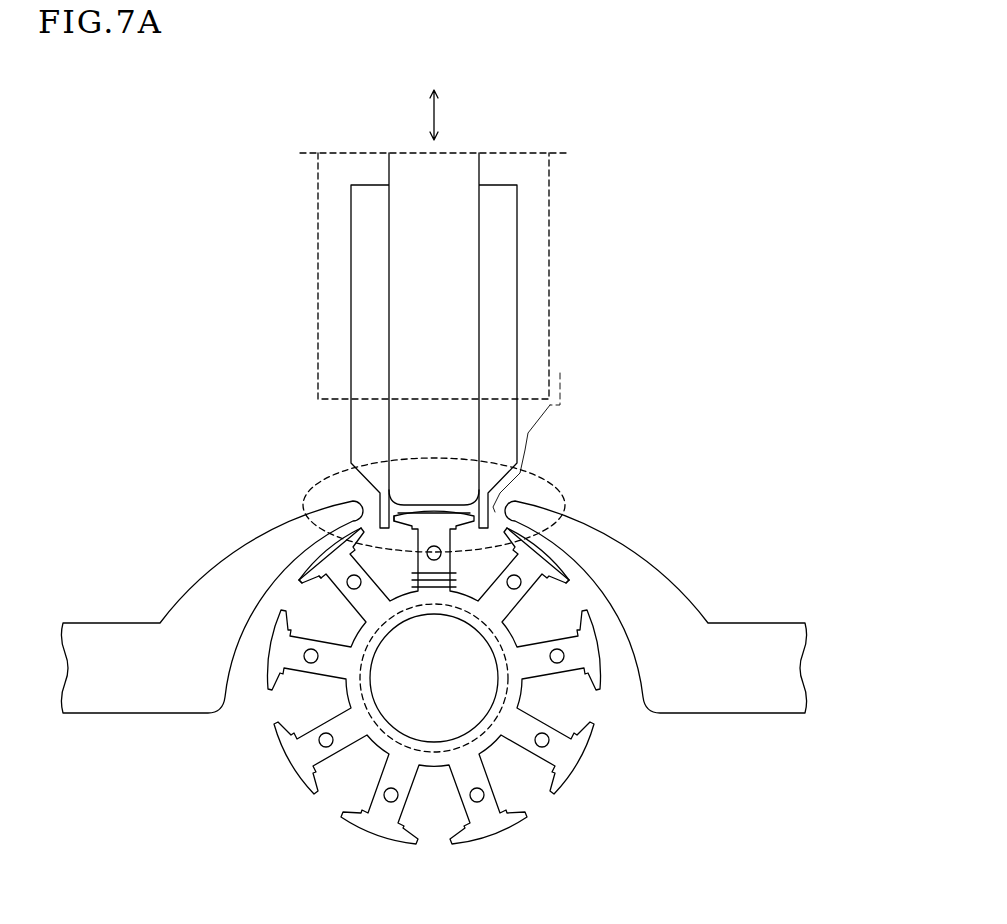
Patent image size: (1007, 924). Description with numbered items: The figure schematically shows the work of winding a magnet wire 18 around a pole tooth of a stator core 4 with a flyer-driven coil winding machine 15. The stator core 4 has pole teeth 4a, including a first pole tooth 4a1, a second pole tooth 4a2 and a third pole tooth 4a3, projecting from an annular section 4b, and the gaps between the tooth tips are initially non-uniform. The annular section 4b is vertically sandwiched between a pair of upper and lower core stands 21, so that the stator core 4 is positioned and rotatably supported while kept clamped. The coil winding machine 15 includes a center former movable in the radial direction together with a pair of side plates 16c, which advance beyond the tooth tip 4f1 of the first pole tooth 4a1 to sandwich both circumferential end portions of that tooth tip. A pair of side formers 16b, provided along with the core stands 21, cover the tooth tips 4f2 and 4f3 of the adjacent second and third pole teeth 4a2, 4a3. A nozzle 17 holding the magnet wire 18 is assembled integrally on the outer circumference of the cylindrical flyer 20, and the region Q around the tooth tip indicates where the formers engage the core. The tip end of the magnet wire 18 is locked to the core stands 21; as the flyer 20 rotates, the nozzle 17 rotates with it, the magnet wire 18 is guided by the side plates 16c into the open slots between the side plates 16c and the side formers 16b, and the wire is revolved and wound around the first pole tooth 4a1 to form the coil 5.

The coil winding machine 15 is at (338, 149).
The flyer 20 is at (553, 178).
The side plates 16c is at (351, 270).
The nozzle 17 is at (560, 373).
The magnet wire 18 is at (537, 427).
The clamp region Q is at (320, 467).
The side formers 16b is at (300, 525).
The stator core 4 is at (438, 602).
The pole teeth 4a is at (590, 745).
The annular section 4b is at (373, 690).
The core stands 21 is at (490, 735).
The first pole tooth 4a1 is at (470, 533).
The second pole tooth 4a2 is at (537, 592).
The third pole tooth 4a3 is at (330, 587).
The tooth tip of the first pole tooth 4f1 is at (410, 507).
The tooth tip of the second pole tooth 4f2 is at (563, 567).
The tooth tip of the third pole tooth 4f3 is at (308, 552).
The coil 5 is at (322, 547).